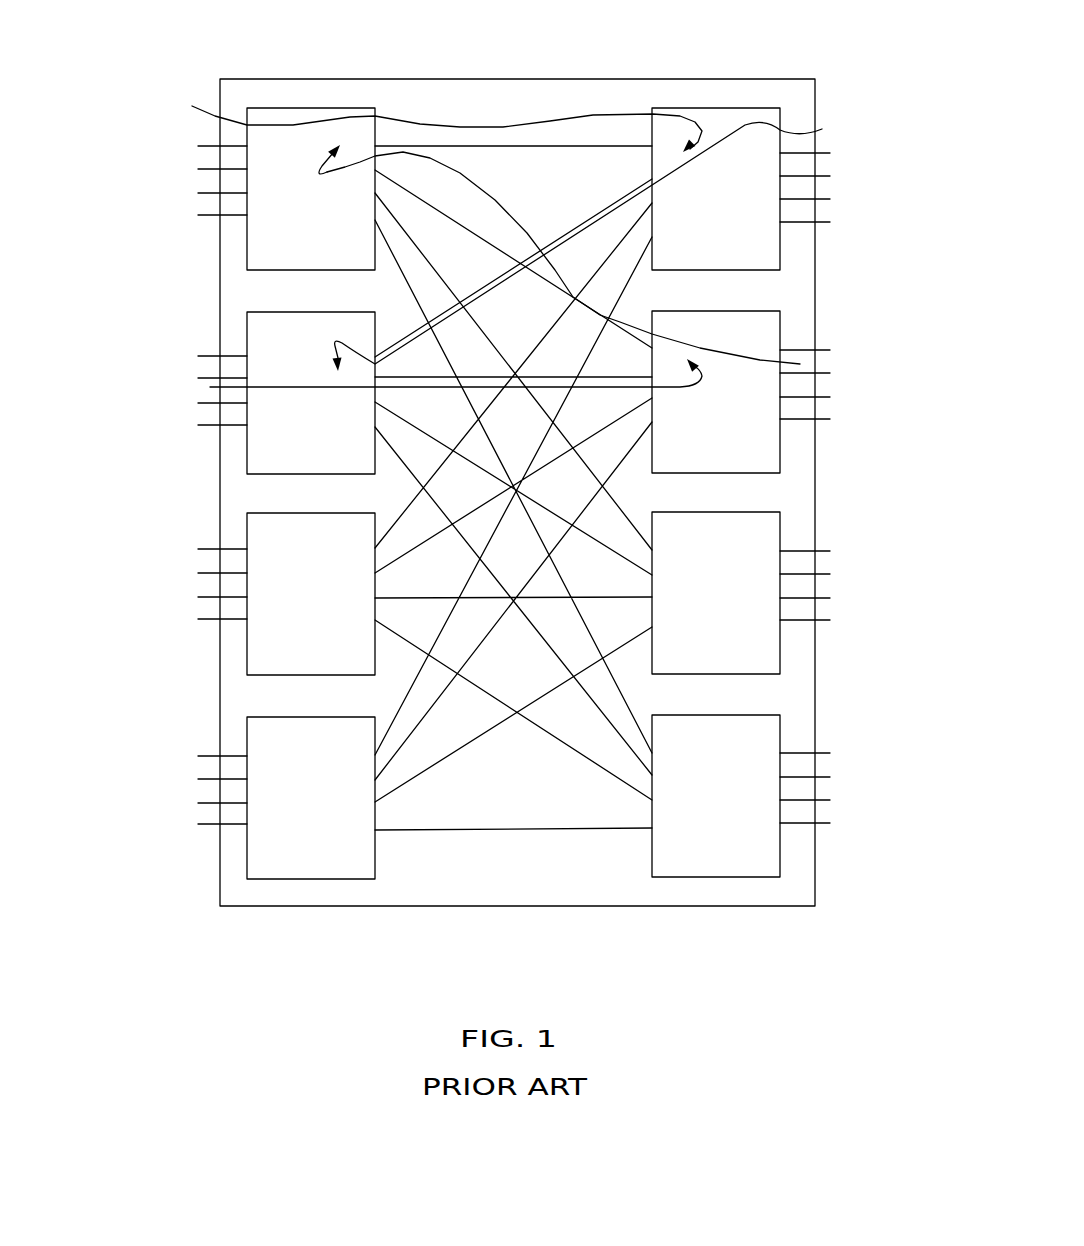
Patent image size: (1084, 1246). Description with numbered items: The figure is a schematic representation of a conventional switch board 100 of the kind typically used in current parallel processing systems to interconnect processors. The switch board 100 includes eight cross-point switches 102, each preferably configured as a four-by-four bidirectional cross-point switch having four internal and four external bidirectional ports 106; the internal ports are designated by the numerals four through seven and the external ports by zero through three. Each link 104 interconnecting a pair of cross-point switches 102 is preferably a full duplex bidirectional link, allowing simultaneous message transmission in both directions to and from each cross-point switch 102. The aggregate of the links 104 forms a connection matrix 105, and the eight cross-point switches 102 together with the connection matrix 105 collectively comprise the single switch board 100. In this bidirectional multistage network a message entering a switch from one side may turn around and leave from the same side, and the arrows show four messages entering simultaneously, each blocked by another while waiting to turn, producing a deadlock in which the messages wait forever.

The switch board 100 is at (308, 28).
The cross-point switch 102 is at (843, 710).
The link 104 is at (571, 222).
The connection matrix 105 is at (498, 100).
The bidirectional port 106 is at (207, 215).